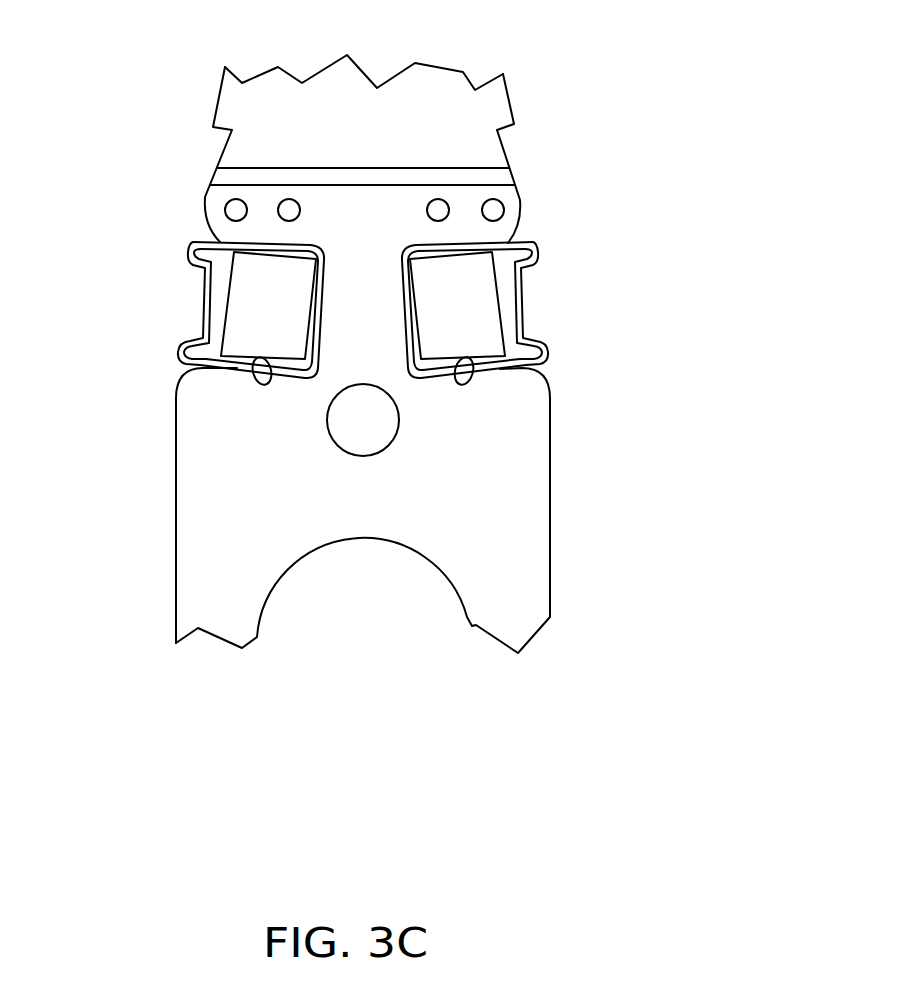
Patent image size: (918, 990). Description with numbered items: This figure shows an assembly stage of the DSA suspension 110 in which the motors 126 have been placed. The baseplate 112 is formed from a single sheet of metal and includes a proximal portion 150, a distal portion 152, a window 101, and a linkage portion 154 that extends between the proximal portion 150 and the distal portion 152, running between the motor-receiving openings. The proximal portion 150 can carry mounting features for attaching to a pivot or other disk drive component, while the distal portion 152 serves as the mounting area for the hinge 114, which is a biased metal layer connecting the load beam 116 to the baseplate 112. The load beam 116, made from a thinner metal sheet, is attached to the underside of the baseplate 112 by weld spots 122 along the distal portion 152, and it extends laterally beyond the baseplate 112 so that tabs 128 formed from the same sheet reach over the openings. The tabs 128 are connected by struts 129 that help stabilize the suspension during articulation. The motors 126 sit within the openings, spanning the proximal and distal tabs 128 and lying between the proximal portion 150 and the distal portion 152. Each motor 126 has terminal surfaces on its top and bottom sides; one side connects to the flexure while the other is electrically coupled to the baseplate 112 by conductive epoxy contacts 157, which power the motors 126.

The window 101 is at (340, 448).
The DSA suspension 110 is at (700, 239).
The baseplate 112 is at (620, 598).
The hinge 114 is at (290, 175).
The load beam 116 is at (455, 85).
The weld spots 122 is at (278, 202).
The motors 126 is at (252, 281).
The tabs 128 is at (233, 238).
The struts 129 is at (203, 310).
The proximal portion 150 is at (507, 528).
The distal portion 152 is at (392, 207).
The linkage portion 154 is at (387, 362).
The conductive epoxy contacts 157 is at (260, 382).